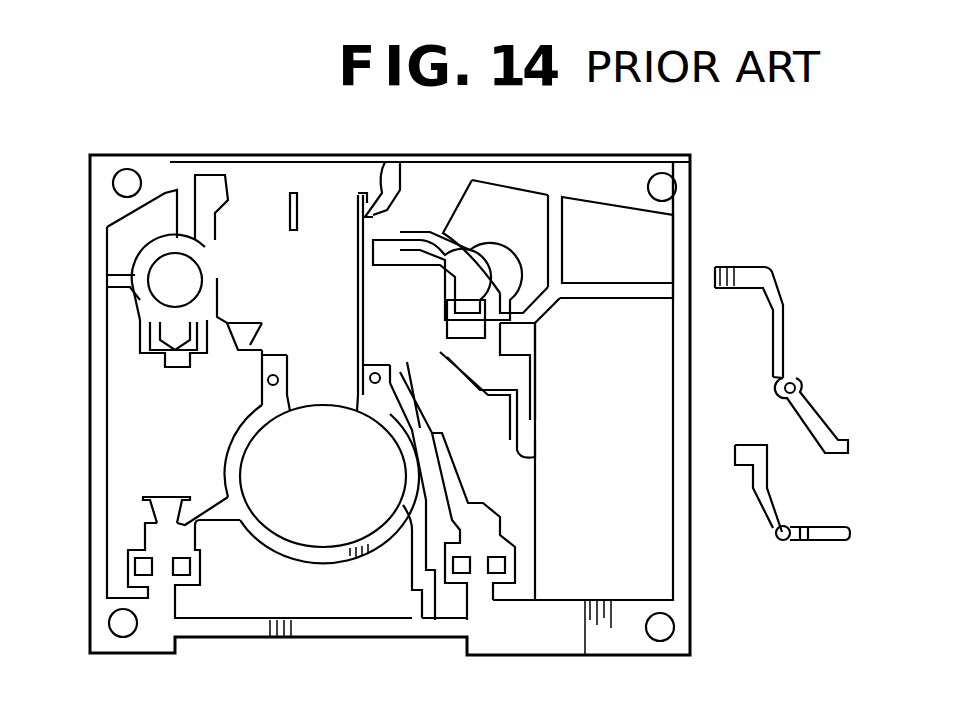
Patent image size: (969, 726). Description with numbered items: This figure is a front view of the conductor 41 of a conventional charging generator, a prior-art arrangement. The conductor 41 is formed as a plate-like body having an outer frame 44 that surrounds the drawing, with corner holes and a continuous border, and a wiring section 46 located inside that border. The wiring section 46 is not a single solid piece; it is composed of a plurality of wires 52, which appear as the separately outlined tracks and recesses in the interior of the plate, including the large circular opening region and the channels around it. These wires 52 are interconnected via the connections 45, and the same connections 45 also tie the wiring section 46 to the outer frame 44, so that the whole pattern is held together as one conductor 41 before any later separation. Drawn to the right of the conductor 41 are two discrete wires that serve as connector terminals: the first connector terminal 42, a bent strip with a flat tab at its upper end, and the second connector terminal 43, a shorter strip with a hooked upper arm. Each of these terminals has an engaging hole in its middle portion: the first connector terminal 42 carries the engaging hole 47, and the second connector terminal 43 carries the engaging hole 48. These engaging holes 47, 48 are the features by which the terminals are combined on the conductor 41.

The conductor 41 is at (95, 322).
The first connector terminal 42 is at (785, 308).
The second connector terminal 43 is at (818, 545).
The outer frame 44 is at (620, 175).
The connections 45 is at (180, 200).
The wiring section 46 is at (388, 195).
The engaging hole 47 is at (796, 389).
The engaging hole 48 is at (778, 545).
The wires 52 is at (235, 440).